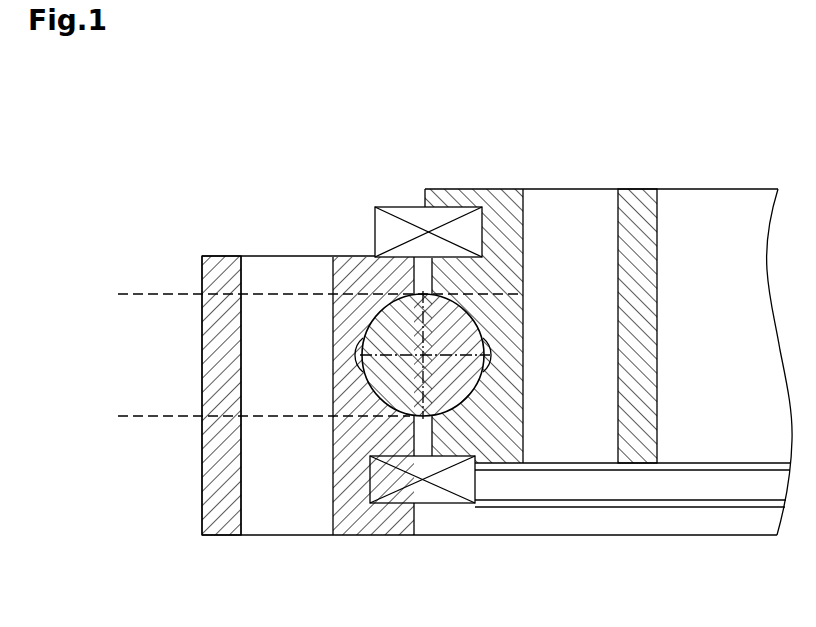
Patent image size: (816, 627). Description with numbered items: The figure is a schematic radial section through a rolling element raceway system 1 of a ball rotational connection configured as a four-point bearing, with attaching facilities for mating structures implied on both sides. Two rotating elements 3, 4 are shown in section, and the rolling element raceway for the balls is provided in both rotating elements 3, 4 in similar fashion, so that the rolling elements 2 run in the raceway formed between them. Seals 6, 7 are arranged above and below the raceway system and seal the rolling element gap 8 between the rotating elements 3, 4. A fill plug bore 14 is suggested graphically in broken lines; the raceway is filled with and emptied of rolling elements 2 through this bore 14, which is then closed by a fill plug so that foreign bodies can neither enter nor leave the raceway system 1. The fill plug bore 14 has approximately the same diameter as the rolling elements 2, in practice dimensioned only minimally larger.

The rolling element raceway system 1 is at (237, 172).
The rolling elements 2 is at (448, 322).
The rotating element 3 is at (506, 212).
The rotating element 4 is at (355, 510).
The seal 6 is at (404, 215).
The seal 7 is at (467, 483).
The rolling element gap 8 is at (422, 435).
The fill plug bore 14 is at (110, 293).